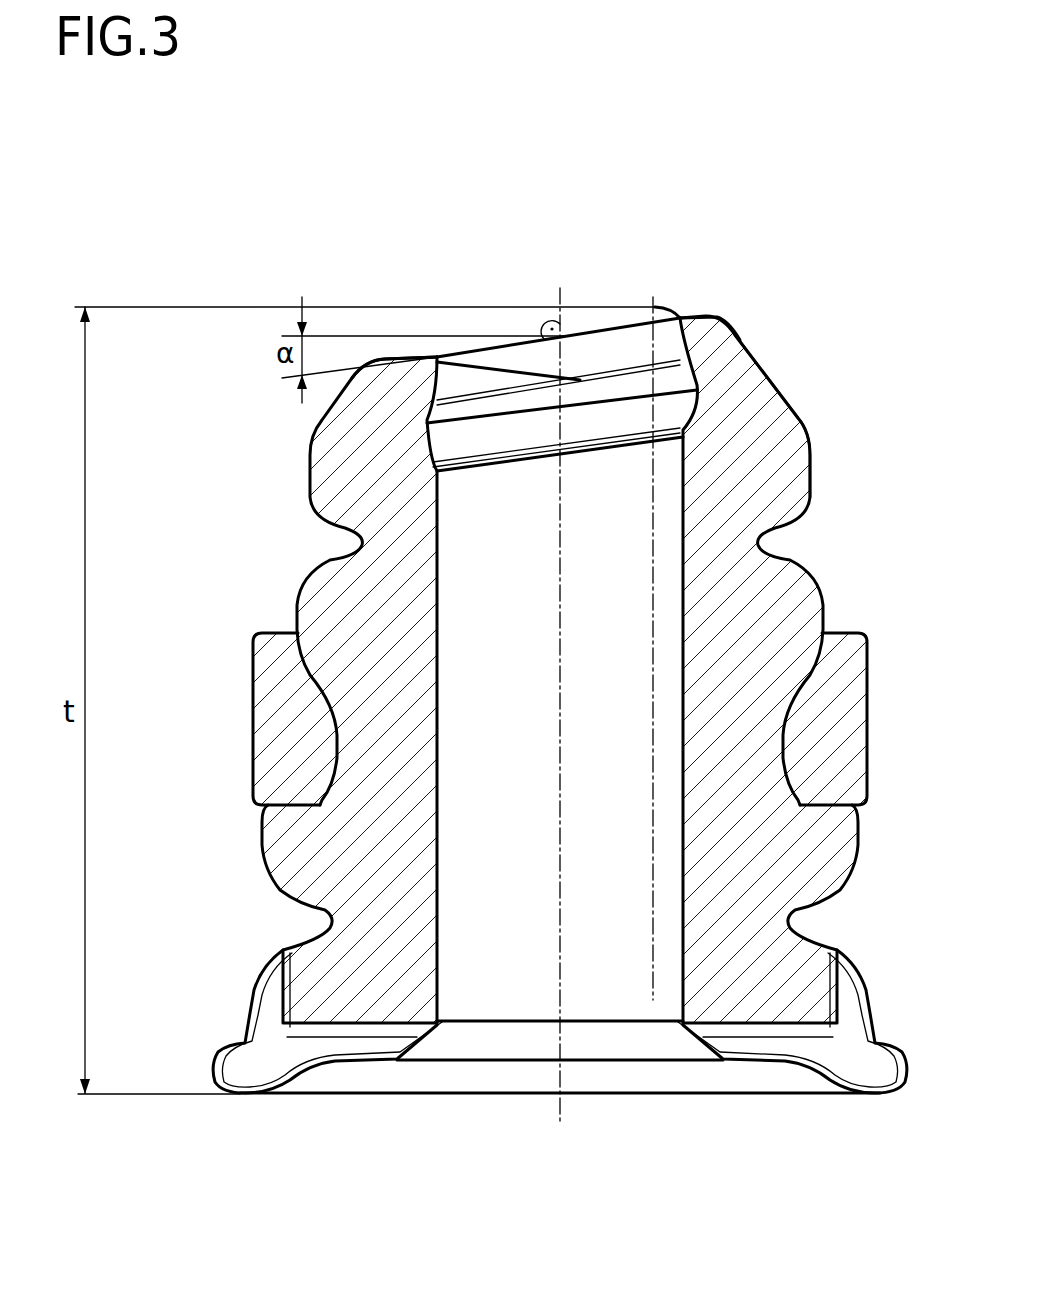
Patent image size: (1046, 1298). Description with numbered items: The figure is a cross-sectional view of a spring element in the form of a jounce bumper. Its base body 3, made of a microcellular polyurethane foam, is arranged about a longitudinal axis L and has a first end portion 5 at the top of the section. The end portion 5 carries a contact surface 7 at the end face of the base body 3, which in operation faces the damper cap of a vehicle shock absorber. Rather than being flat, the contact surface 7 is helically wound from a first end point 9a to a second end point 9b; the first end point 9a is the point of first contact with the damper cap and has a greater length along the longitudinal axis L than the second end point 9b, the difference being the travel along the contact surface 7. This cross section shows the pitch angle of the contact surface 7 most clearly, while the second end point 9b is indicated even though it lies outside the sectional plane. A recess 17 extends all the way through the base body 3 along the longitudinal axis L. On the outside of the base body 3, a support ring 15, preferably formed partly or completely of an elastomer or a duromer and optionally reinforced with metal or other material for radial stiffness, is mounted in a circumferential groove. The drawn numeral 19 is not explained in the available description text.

The base body 3 is at (262, 838).
The first end portion 5 is at (885, 307).
The contact surface 7 is at (593, 318).
The first end point 9a is at (700, 317).
The second end point 9b is at (423, 357).
The support ring 15 is at (280, 710).
The recess 17 is at (460, 1005).
The internal thread 19 is at (653, 1000).
The longitudinal axis L is at (562, 1105).